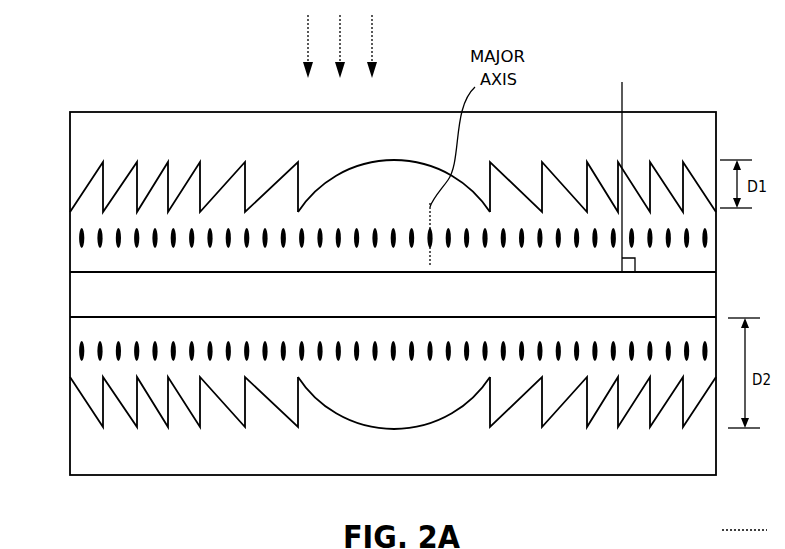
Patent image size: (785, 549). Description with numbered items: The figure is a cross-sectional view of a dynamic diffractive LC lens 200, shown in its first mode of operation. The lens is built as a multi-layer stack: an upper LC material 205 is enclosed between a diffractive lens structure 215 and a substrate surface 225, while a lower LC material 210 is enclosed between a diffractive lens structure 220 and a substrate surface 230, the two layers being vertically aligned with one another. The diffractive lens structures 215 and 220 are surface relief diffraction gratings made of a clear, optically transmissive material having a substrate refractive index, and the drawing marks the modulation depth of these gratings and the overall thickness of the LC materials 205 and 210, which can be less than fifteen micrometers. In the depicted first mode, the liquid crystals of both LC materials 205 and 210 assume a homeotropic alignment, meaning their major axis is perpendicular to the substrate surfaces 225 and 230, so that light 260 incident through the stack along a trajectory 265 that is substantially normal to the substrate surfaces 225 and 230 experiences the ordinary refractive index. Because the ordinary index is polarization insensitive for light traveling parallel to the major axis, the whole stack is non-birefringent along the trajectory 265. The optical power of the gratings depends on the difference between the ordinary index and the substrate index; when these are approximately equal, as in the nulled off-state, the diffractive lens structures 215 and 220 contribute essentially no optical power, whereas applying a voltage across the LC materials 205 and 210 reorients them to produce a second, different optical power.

The dynamic diffractive LC lens 200 is at (731, 78).
The LC material 205 is at (404, 200).
The LC material 210 is at (405, 410).
The diffractive lens structure 215 is at (345, 145).
The diffractive lens structure 220 is at (467, 458).
The substrate surface 225 is at (78, 266).
The substrate surface 230 is at (79, 323).
The light 260 is at (372, 38).
The trajectory 265 is at (622, 82).